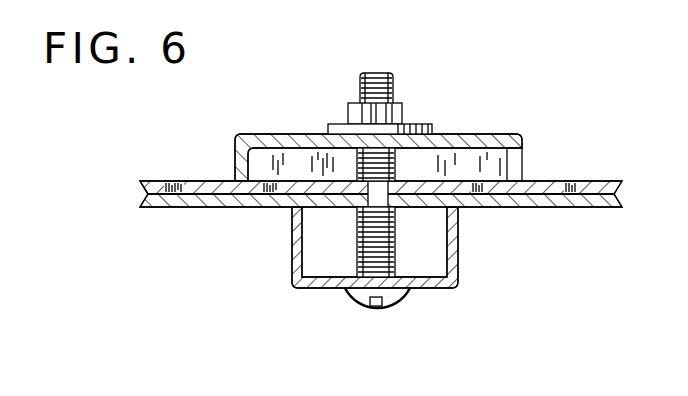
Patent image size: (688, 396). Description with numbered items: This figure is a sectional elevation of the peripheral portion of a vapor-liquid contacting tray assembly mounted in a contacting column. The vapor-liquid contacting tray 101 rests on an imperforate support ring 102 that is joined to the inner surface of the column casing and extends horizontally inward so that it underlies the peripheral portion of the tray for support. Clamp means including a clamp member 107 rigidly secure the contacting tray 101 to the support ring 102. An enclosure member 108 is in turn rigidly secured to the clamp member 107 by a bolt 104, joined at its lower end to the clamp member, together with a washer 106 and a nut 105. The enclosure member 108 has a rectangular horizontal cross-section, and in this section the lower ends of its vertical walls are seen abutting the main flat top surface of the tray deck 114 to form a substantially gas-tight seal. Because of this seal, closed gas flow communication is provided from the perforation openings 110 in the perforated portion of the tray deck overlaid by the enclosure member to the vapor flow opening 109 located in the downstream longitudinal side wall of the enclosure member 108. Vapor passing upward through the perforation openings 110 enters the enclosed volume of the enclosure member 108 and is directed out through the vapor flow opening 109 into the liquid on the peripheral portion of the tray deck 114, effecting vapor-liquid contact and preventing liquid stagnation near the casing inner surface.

The vapor-liquid contacting tray 101 is at (541, 181).
The imperforate support ring 102 is at (547, 208).
The bolt 104 is at (357, 299).
The nut 105 is at (403, 115).
The washer 106 is at (338, 124).
The clamp member 107 is at (458, 280).
The enclosure member 108 is at (487, 136).
The vapor flow opening 109 is at (513, 167).
The perforation openings 110 is at (275, 209).
The tray deck 114 is at (217, 181).